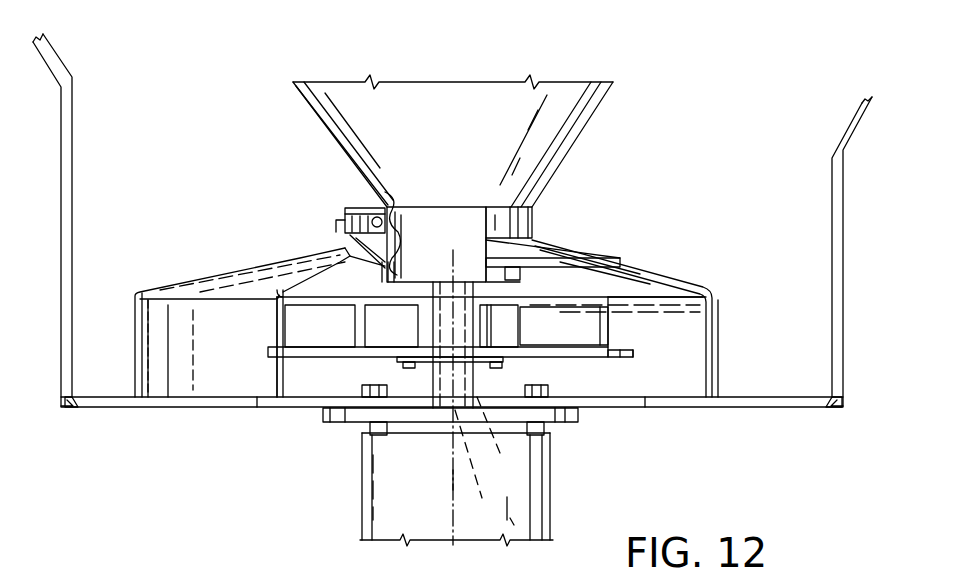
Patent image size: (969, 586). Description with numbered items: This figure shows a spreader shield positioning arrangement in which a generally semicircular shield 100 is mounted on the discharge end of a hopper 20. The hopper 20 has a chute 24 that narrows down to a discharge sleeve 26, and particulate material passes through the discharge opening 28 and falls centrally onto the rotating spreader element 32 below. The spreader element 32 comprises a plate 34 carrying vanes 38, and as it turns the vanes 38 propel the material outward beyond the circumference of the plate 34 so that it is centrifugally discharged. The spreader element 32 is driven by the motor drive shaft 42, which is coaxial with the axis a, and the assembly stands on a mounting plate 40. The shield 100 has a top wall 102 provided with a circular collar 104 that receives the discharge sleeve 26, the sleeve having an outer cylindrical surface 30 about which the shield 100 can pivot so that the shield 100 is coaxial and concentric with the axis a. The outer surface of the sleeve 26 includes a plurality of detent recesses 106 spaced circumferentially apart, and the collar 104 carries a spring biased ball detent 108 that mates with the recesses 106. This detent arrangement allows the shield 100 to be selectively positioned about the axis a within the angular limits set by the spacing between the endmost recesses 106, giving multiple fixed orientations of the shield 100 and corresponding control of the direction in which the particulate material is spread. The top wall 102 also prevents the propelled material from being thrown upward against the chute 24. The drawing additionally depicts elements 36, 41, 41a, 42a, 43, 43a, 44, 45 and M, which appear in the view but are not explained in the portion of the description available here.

The hopper 20 is at (584, 122).
The chute 24 is at (327, 125).
The discharge sleeve 26 is at (520, 277).
The discharge opening 28 is at (500, 283).
The outer cylindrical surface 30 is at (390, 266).
The spreader element 32 is at (632, 355).
The plate 34 is at (605, 358).
The flange 36 is at (445, 393).
The vanes 38 is at (600, 320).
The mounting plate 40 is at (286, 409).
The right side wall 41 is at (833, 172).
The right wall foot 41a is at (840, 410).
The motor drive shaft 42 is at (456, 398).
The motor shaft 42a is at (468, 320).
The left side wall 43 is at (70, 107).
The left wall foot 43a is at (68, 408).
The offset axis 44 is at (499, 440).
The motor mounting bolt 45 is at (546, 432).
The spreader shield 100 is at (684, 277).
The top wall 102 is at (242, 268).
The circular collar 104 is at (536, 224).
The detent recesses 106 is at (396, 232).
The spring biased ball detent 108 is at (384, 215).
The axis a is at (452, 478).
The motor M is at (512, 520).